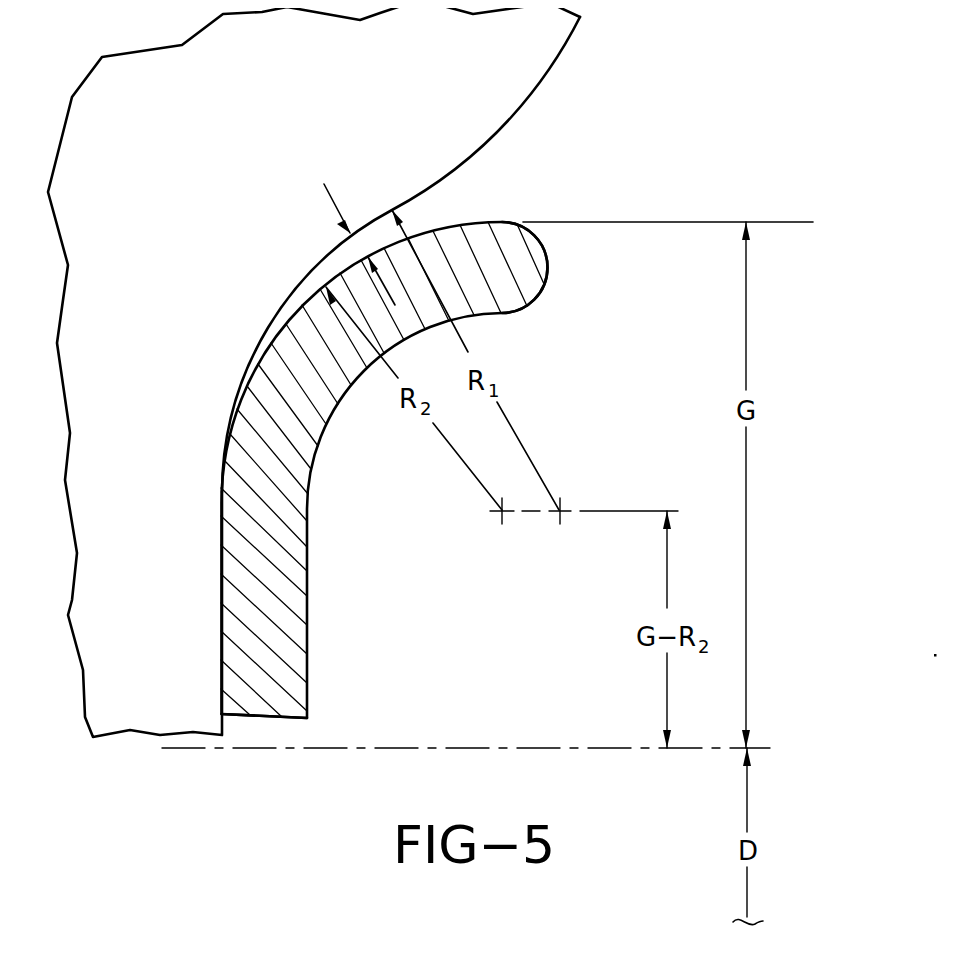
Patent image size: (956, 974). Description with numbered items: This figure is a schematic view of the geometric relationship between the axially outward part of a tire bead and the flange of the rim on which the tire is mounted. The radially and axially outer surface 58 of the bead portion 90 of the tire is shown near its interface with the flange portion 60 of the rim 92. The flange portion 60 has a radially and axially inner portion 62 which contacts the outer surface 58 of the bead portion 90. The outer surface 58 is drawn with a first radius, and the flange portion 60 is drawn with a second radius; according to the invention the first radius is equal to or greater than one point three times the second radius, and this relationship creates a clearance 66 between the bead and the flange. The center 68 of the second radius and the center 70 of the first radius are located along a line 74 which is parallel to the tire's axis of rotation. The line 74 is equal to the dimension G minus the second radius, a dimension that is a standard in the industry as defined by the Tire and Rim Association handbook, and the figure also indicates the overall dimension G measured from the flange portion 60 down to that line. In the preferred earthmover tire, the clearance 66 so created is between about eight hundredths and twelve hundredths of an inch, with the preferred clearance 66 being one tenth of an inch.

The radially and axially outer surface 58 is at (500, 130).
The flange portion 60 is at (285, 673).
The radially and axially inner portion 62 is at (447, 228).
The clearance 66 is at (326, 196).
The center of R2 68 is at (500, 514).
The center of R1 70 is at (563, 507).
The line 74 is at (646, 508).
The bead portion 90 is at (477, 72).
The rim 92 is at (265, 596).